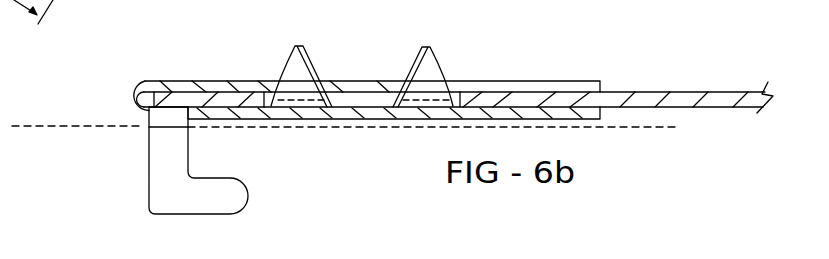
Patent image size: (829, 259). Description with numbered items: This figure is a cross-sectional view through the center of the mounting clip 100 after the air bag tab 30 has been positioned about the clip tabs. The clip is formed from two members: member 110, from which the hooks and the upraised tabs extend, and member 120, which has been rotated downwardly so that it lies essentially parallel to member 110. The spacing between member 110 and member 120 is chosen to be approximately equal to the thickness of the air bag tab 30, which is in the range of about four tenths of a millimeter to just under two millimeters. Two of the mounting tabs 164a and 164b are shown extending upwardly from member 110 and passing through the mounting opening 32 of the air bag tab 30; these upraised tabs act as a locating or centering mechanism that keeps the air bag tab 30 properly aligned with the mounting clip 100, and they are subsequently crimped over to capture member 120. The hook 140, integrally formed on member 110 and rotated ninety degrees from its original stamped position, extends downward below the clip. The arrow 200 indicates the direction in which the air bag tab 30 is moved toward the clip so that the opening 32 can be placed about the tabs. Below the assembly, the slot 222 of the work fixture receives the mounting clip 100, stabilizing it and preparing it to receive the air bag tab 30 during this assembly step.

The mounting clip 100 is at (136, 82).
The air bag tab 30 is at (187, 107).
The mounting hole 32 is at (262, 102).
The member 110 is at (315, 112).
The member 120 is at (357, 83).
The hook 140 is at (199, 198).
The mounting tab 164a is at (430, 72).
The mounting tab 164b is at (292, 72).
The arrow 200 is at (58, 127).
The slot 222 is at (145, 127).